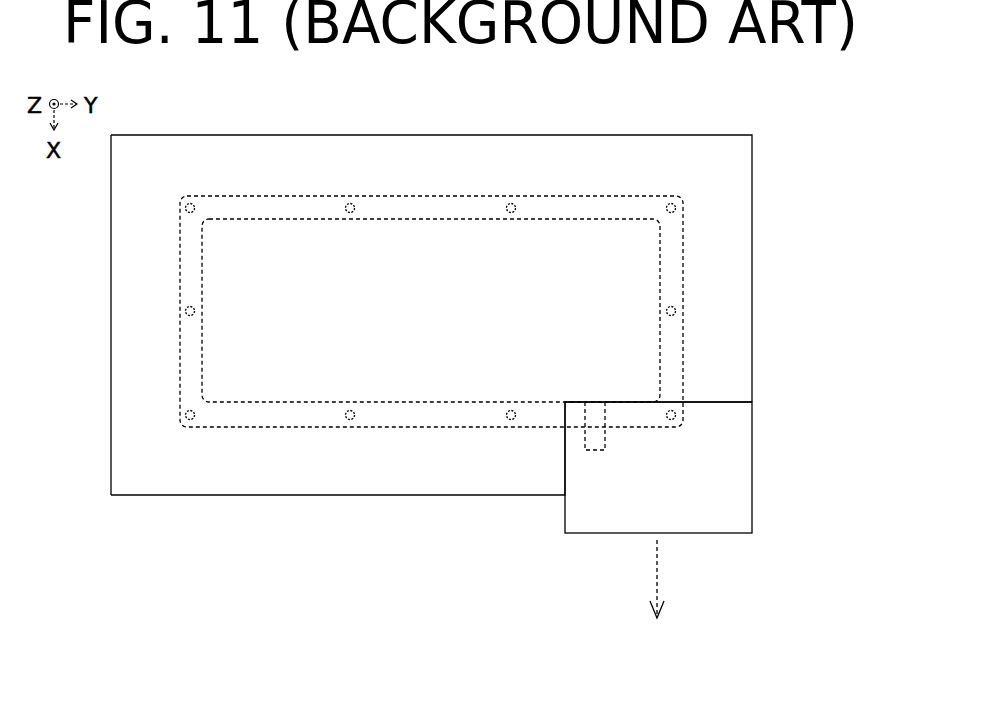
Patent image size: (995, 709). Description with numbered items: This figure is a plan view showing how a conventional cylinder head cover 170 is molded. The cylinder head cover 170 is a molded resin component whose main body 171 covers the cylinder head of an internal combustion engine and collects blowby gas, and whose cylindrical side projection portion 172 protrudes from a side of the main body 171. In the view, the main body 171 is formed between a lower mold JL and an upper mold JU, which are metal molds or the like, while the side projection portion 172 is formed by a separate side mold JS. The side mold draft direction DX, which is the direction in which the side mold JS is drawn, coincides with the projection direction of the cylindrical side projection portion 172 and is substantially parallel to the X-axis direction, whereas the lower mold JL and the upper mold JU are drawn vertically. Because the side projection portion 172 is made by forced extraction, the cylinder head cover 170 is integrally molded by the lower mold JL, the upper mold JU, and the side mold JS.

The cylinder head cover 170 is at (525, 323).
The main body 171 is at (660, 347).
The side projection portion 172 is at (605, 445).
The upper mold JU is at (401, 354).
The lower mold JL is at (174, 498).
The side mold JS is at (700, 500).
The side mold draft direction DX is at (657, 595).